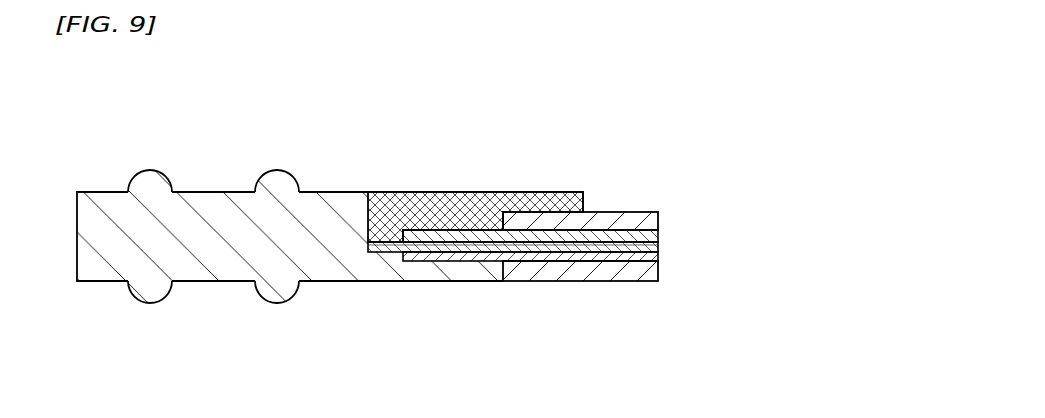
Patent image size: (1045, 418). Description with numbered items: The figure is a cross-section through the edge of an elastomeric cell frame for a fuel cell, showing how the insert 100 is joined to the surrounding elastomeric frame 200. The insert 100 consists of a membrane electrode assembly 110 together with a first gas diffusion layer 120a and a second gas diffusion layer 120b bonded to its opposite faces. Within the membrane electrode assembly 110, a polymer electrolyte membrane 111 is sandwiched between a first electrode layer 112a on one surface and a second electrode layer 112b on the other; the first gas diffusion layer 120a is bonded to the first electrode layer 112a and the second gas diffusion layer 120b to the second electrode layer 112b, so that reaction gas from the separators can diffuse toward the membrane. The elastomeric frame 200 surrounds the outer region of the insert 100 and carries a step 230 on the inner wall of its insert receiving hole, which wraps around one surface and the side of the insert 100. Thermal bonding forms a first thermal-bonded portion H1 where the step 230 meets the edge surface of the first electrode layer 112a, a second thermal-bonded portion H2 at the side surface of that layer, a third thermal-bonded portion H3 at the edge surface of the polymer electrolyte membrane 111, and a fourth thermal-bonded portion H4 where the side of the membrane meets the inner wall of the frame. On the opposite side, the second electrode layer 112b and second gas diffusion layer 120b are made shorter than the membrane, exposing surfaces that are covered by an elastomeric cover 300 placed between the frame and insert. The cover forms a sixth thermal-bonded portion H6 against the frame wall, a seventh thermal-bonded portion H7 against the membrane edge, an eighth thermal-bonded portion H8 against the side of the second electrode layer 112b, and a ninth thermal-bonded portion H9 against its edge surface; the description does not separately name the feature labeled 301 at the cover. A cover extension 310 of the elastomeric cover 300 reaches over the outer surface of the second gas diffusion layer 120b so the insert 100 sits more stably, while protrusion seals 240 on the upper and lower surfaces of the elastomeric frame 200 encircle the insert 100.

The insert 100 is at (628, 249).
The membrane electrode assembly 110 is at (596, 249).
The polymer electrolyte membrane 111 is at (657, 247).
The first electrode layer 112a is at (582, 273).
The second electrode layer 112b is at (657, 233).
The first gas diffusion layer 120a is at (643, 267).
The second gas diffusion layer 120b is at (640, 220).
The elastomeric frame 200 is at (105, 202).
The step 230 is at (430, 274).
The protrusion seal 240 is at (267, 302).
The elastomeric cover 300 is at (438, 205).
The adhesive member inner portion 301 is at (381, 238).
The cover extension 310 is at (548, 193).
The first thermal-bonded portion H1 is at (472, 265).
The second thermal-bonded portion H2 is at (385, 257).
The third thermal-bonded portion H3 is at (383, 253).
The fourth thermal-bonded portion H4 is at (367, 244).
The sixth thermal-bonded portion H6 is at (368, 222).
The seventh thermal-bonded portion H7 is at (391, 236).
The eighth thermal-bonded portion H8 is at (404, 230).
The ninth thermal-bonded portion H9 is at (490, 212).